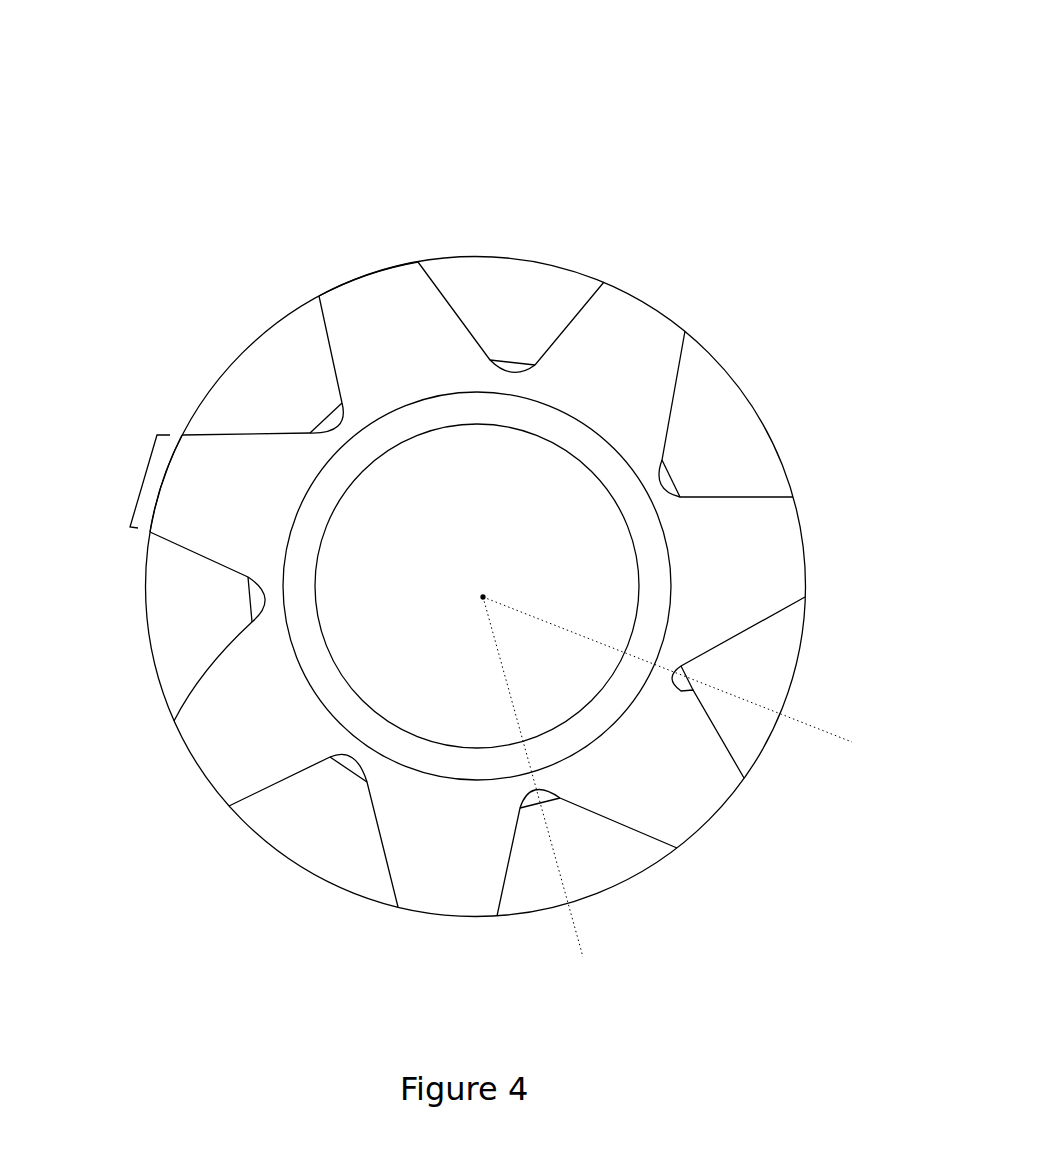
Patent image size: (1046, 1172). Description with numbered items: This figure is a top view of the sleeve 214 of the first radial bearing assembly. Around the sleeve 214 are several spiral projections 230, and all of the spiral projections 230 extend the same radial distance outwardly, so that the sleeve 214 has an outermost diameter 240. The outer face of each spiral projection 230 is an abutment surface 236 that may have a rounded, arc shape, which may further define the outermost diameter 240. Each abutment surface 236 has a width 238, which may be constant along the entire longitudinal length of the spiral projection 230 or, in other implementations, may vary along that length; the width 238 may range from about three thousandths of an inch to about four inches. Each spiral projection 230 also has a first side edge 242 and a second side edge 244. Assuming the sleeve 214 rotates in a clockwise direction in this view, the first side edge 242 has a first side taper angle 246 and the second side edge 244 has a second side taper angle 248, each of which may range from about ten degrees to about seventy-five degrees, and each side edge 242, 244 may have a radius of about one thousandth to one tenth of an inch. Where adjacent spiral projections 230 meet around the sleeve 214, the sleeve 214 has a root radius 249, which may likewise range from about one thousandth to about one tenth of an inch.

The sleeve 214 is at (807, 58).
The spiral projection 230 is at (638, 318).
The abutment surface 236 is at (353, 274).
The width 238 is at (140, 478).
The outermost diameter 240 is at (749, 396).
The first side edge 242 is at (173, 713).
The second side edge 244 is at (239, 812).
The first side taper angle 246 is at (555, 808).
The second side taper angle 248 is at (695, 695).
The root radius 249 is at (333, 425).